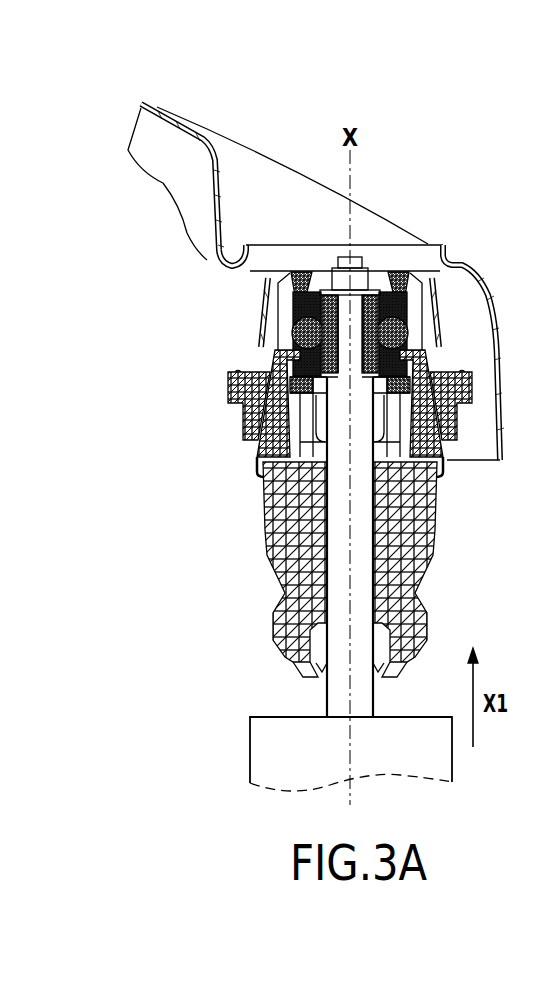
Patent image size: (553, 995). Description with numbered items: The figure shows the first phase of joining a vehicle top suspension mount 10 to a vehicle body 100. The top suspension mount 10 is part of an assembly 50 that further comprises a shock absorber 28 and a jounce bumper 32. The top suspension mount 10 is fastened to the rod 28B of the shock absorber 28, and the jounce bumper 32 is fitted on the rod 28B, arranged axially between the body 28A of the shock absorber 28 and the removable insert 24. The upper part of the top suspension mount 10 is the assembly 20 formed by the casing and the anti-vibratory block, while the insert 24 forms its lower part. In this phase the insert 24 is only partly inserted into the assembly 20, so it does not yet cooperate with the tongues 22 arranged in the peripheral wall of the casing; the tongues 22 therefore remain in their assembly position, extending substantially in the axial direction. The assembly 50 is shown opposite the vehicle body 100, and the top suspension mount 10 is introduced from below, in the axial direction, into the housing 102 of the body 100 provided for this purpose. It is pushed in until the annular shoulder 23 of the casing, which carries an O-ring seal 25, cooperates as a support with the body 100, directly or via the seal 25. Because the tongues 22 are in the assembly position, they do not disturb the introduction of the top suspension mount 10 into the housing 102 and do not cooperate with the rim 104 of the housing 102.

The vehicle body 100 is at (180, 114).
The housing 102 is at (386, 256).
The rim 104 is at (447, 258).
The top suspension mount 10 is at (188, 263).
The assembly 20 is at (248, 301).
The tongues 22 is at (258, 313).
The shoulder 23 is at (240, 378).
The removable insert 24 is at (272, 451).
The O-ring seal 25 is at (238, 371).
The jounce bumper 32 is at (272, 537).
The assembly 50 is at (138, 349).
The shock absorber 28 is at (188, 677).
The body 28A is at (264, 748).
The rod 28B is at (342, 702).